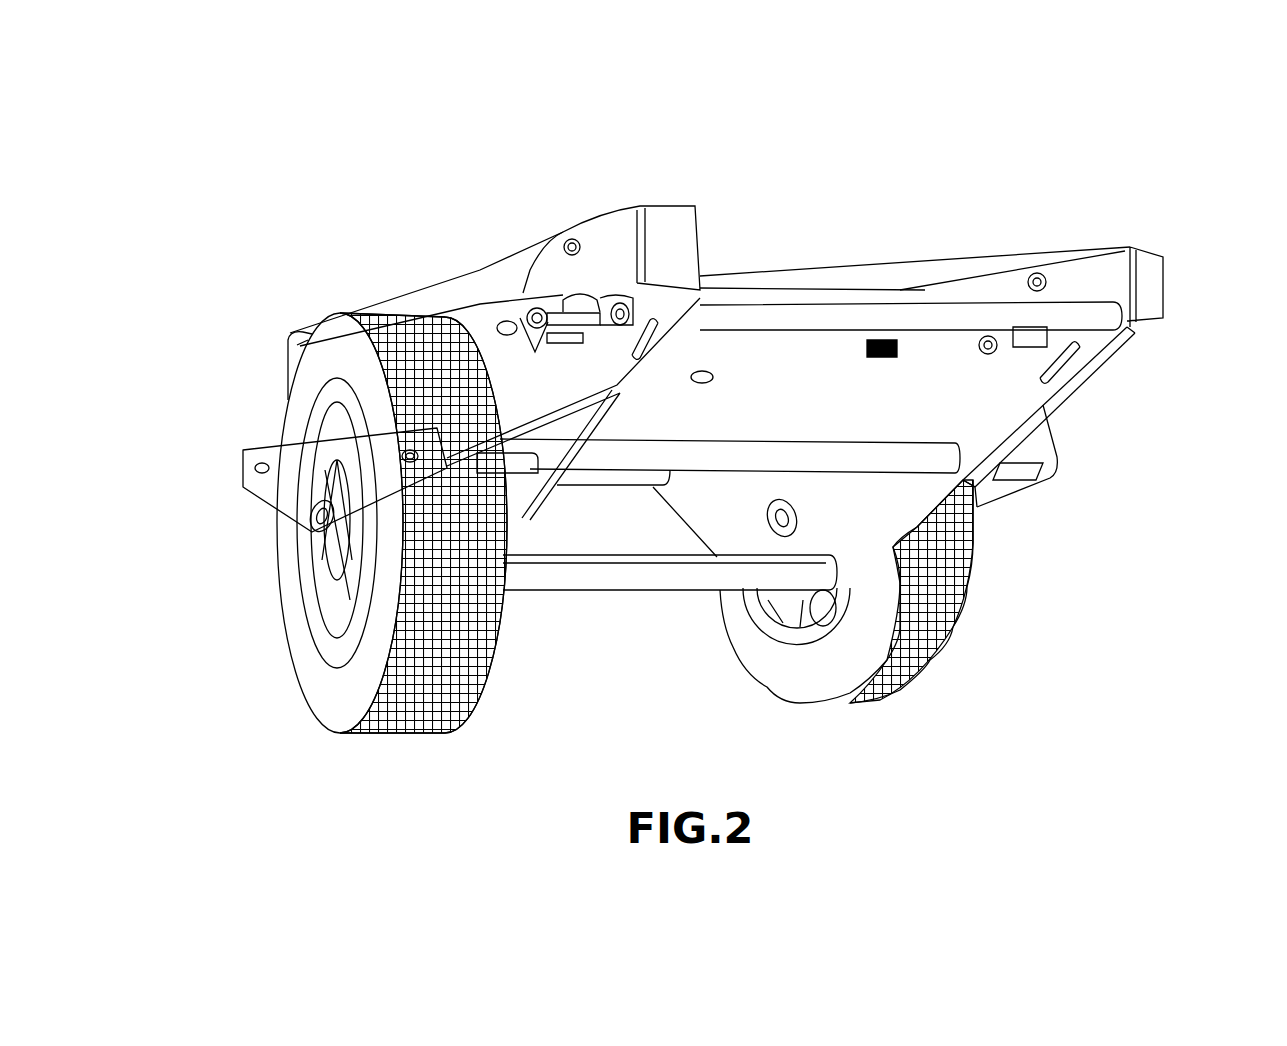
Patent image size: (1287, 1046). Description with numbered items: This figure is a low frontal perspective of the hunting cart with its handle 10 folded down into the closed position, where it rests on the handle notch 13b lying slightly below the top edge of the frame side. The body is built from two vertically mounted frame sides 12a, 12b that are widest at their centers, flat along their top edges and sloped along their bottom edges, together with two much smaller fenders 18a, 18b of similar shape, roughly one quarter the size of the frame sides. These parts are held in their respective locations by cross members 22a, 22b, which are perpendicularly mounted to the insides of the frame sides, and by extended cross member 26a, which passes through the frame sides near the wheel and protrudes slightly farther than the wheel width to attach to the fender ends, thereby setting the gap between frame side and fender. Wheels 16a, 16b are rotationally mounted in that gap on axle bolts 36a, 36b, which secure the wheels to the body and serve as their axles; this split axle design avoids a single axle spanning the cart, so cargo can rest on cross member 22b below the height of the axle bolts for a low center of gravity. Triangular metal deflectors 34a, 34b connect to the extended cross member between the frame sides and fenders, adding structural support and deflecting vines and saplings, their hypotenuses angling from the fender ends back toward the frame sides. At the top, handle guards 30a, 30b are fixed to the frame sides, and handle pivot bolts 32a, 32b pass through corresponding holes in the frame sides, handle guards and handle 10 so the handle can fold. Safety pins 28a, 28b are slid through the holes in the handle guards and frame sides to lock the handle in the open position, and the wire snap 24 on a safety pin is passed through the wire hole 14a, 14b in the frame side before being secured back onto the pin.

The handle 10 is at (470, 290).
The frame side 12a is at (895, 507).
The frame side 12b is at (503, 365).
The handle notch 13b is at (293, 362).
The wire hole 14a is at (1028, 332).
The wire hole 14b is at (624, 310).
The wheel 16a is at (888, 672).
The wheel 16b is at (330, 690).
The fender 18a is at (995, 490).
The fender 18b is at (290, 492).
The cross member 22a is at (912, 300).
The cross member 22b is at (620, 582).
The wire snap 24 is at (608, 305).
The extended cross member 26a is at (733, 452).
The safety pin 28a is at (995, 345).
The safety pin 28b is at (534, 312).
The handle guard 30a is at (1153, 287).
The handle guard 30b is at (600, 240).
The handle pivot bolt 32a is at (1040, 276).
The handle pivot bolt 32b is at (570, 238).
The deflector 34a is at (1032, 447).
The deflector 34b is at (555, 440).
The axle bolt 36a is at (793, 527).
The axle bolt 36b is at (308, 527).